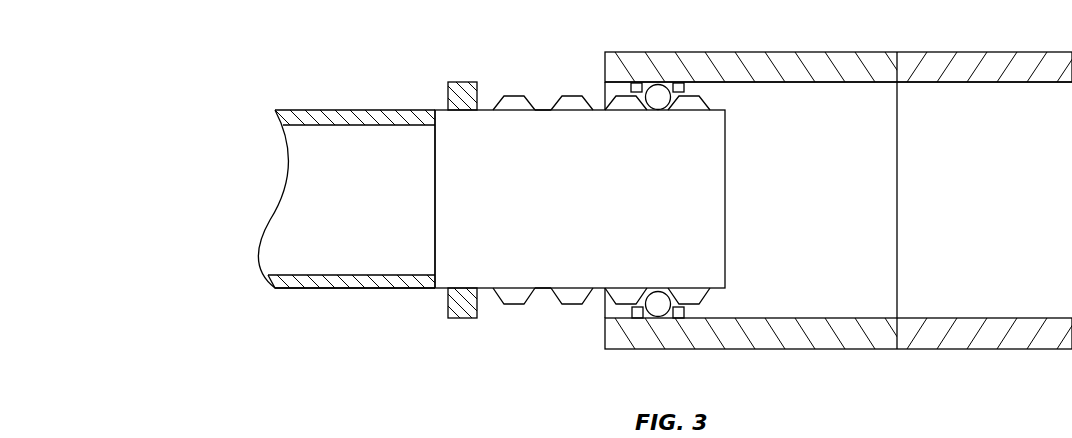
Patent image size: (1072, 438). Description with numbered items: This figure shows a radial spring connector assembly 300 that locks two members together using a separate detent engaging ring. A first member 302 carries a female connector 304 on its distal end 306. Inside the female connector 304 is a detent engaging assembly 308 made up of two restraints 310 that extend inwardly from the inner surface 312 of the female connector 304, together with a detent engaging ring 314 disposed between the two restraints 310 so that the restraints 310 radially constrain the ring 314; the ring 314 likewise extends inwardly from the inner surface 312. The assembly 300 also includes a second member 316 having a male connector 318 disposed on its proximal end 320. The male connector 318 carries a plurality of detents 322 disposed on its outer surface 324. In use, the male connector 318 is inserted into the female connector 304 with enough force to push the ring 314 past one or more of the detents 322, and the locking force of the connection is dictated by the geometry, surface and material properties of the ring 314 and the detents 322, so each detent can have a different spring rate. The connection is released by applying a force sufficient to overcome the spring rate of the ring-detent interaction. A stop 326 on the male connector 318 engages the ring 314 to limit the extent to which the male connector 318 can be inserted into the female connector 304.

The radial spring connector assembly 300 is at (230, 150).
The first member 302 is at (993, 205).
The female connector 304 is at (826, 351).
The distal end 306 is at (896, 239).
The detent engaging assembly 308 is at (663, 321).
The restraints 310 is at (636, 82).
The inner surface 312 is at (754, 83).
The detent engaging ring 314 is at (658, 83).
The second member 316 is at (367, 210).
The male connector 318 is at (599, 210).
The proximal end 320 is at (434, 238).
The detents 322 is at (571, 306).
The outer surface 324 is at (541, 290).
The stop 326 is at (458, 84).